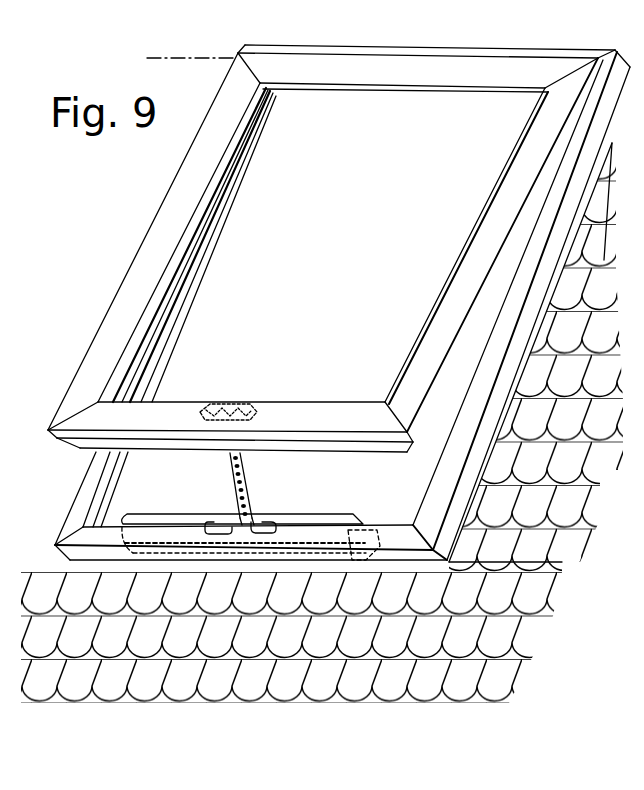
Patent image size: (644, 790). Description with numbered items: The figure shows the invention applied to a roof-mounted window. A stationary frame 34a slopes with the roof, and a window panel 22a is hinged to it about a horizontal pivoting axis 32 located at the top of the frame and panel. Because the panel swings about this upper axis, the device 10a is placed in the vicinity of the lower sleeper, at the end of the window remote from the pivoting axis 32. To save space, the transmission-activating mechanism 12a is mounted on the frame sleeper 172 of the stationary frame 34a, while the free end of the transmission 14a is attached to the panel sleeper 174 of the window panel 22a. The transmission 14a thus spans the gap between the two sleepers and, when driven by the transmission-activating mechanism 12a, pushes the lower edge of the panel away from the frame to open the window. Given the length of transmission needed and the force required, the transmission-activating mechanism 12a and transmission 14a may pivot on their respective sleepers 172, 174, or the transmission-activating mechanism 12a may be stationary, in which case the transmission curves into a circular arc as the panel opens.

The pivoting axis 32 is at (168, 53).
The window panel 22a is at (140, 268).
The stationary frame 34a is at (90, 491).
The panel sleeper 174 is at (297, 414).
The transmission 14a is at (226, 468).
The device 10a is at (262, 498).
The transmission-activating mechanism 12a is at (345, 511).
The frame sleeper 172 is at (390, 540).